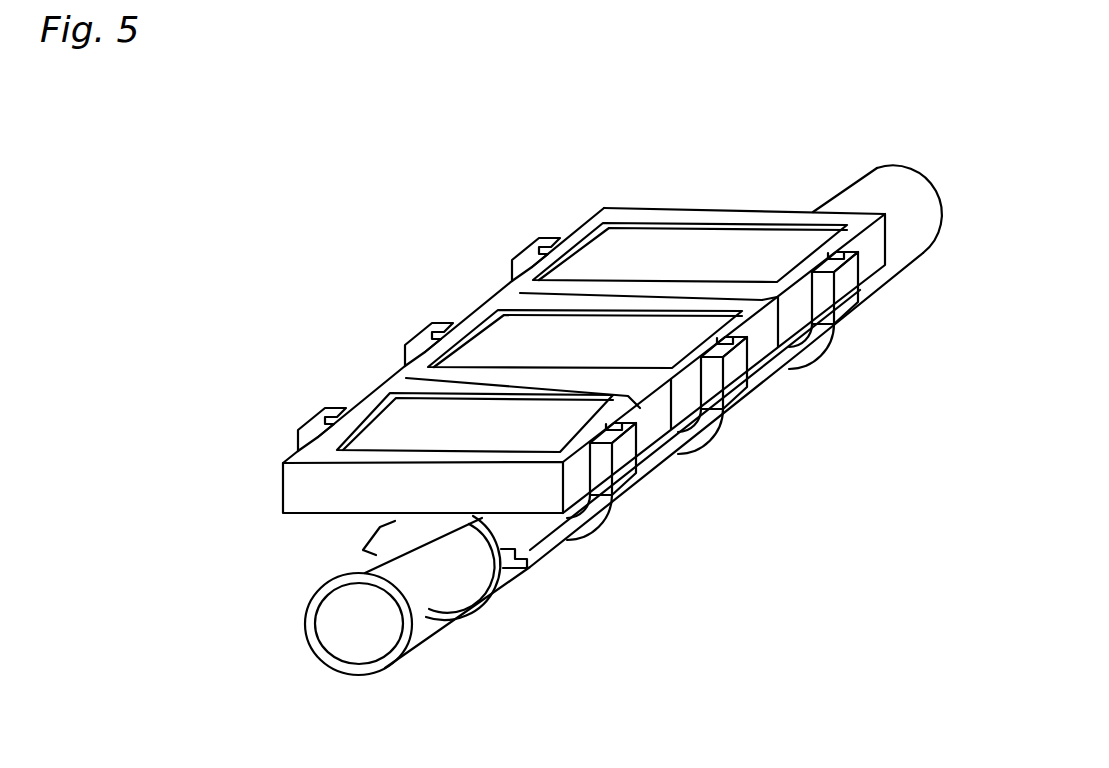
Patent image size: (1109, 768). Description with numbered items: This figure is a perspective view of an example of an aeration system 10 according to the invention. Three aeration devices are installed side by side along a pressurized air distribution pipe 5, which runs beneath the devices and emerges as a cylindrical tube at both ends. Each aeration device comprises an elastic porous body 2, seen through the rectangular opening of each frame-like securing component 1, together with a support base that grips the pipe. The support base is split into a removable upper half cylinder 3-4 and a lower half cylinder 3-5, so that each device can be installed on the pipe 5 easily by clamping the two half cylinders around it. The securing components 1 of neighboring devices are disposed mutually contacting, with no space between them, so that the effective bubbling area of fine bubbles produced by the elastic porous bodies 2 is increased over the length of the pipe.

The aeration system 10 is at (655, 137).
The securing component 1 is at (700, 212).
The elastic porous body 2 is at (600, 243).
The upper half cylinder 3-4 is at (380, 528).
The lower half cylinder 3-5 is at (753, 393).
The pressurized air distribution pipe 5 is at (423, 615).